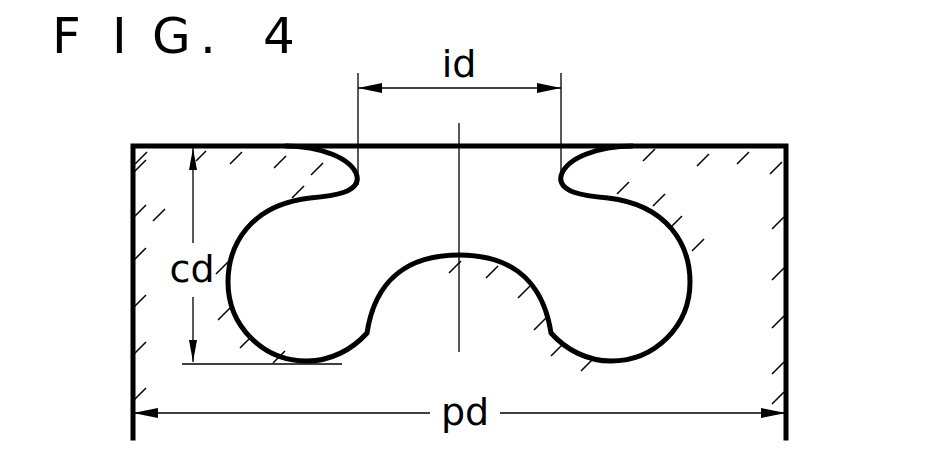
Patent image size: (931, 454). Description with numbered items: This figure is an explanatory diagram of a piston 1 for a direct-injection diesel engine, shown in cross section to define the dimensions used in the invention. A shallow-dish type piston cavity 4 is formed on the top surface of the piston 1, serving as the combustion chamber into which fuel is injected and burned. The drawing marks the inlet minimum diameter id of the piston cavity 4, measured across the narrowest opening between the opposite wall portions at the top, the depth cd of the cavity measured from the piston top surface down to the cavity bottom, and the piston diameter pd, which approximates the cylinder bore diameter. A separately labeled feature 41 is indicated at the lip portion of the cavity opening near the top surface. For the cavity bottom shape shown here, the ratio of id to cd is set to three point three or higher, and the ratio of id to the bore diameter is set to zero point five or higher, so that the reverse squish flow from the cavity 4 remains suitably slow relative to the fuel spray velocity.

The piston 1 is at (133, 233).
The shallow-dish type piston cavity 4 is at (672, 318).
The re-entrant lip portion of combustion chamber 41 is at (583, 173).